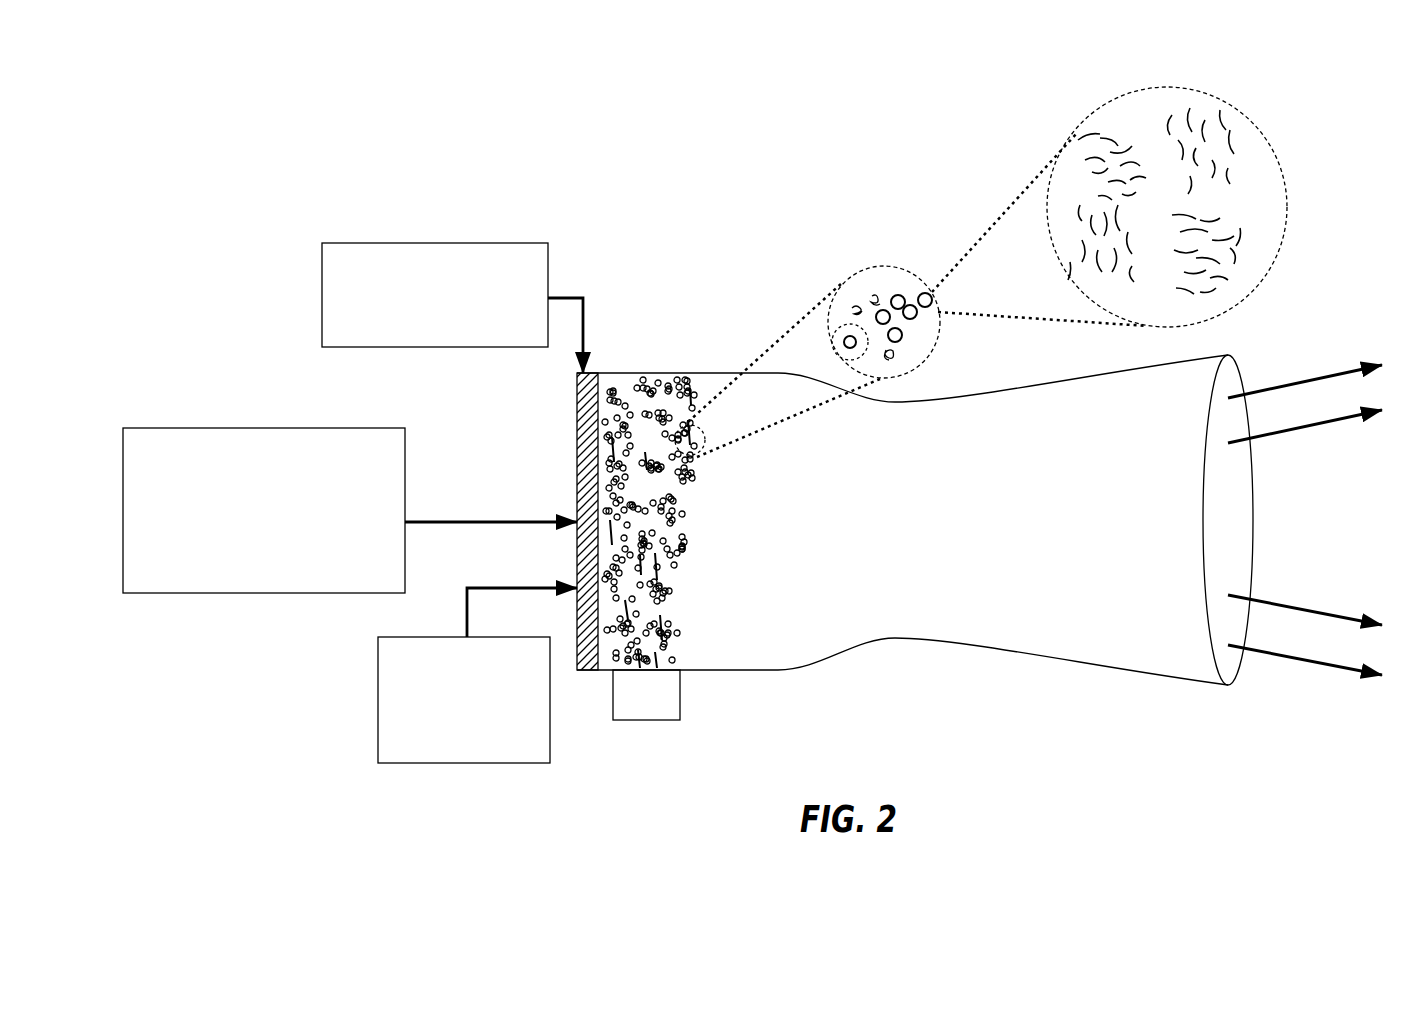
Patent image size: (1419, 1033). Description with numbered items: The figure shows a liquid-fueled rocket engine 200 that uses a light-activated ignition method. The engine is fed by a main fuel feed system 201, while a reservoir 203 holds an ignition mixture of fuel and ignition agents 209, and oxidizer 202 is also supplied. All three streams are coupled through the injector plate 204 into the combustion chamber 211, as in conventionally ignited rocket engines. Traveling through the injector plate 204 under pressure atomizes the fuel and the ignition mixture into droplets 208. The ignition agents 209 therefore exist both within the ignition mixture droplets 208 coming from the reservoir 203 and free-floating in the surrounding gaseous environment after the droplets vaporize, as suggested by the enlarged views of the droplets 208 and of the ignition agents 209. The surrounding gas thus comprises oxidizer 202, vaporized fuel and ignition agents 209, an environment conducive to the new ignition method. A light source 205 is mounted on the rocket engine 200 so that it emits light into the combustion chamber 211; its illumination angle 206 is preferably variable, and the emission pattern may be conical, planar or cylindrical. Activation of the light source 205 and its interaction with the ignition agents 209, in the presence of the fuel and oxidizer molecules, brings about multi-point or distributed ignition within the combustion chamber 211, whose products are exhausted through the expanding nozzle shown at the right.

The liquid-fueled rocket engine 200 is at (413, 152).
The main fuel feed system 201 is at (282, 428).
The oxidizer 202 is at (467, 242).
The reservoir 203 is at (378, 665).
The injector plate 204 is at (577, 448).
The light source 205 is at (657, 703).
The illumination angle 206 is at (670, 580).
The droplets 208 is at (697, 457).
The ignition agents 209 is at (1097, 190).
The combustion chamber 211 is at (677, 373).